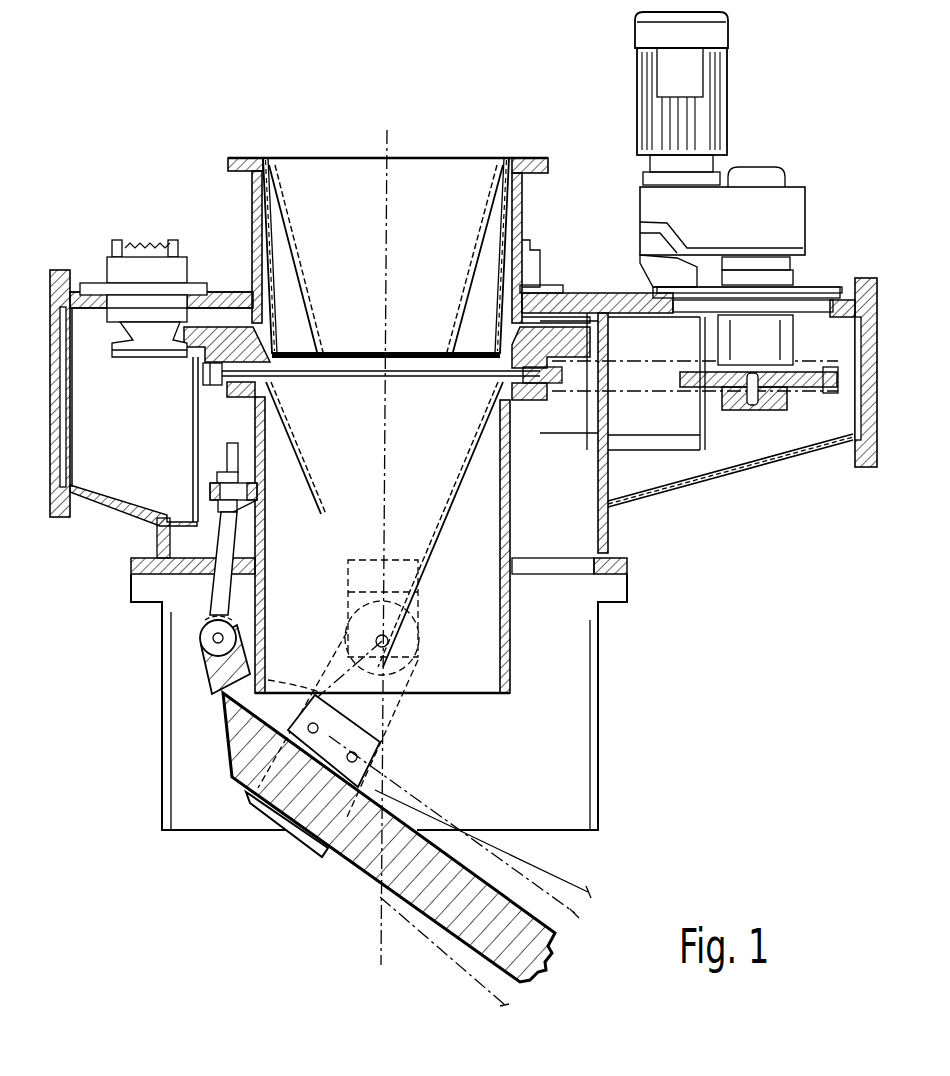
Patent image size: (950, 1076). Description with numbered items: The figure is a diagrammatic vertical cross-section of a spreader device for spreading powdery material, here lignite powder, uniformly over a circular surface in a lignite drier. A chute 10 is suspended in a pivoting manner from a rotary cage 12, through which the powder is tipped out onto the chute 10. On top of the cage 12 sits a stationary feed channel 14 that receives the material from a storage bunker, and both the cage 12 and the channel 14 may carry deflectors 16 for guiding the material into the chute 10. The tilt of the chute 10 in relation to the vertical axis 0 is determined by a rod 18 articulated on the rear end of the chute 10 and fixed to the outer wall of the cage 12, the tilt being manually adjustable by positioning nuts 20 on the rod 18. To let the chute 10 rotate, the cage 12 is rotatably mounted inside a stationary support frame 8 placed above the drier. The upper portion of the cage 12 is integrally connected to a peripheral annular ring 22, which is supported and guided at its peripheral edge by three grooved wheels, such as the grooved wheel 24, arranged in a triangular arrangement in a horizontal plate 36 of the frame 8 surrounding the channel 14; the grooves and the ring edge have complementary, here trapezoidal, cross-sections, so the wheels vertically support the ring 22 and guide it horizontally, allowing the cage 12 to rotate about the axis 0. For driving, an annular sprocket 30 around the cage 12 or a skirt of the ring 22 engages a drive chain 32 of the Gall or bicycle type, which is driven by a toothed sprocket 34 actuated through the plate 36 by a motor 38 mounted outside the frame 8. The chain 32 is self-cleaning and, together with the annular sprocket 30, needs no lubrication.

The vertical axis 0 is at (390, 191).
The stationary support frame 8 is at (618, 536).
The chute 10 is at (354, 846).
The rotary cage 12 is at (506, 650).
The stationary feed channel 14 is at (517, 198).
The deflectors 16 is at (457, 322).
The rod 18 is at (217, 590).
The positioning nuts 20 is at (220, 505).
The peripheral annular ring 22 is at (192, 358).
The grooved wheel 24 is at (120, 357).
The annular sprocket 30 is at (556, 383).
The drive chain 32 is at (670, 393).
The toothed sprocket 34 is at (775, 404).
The horizontal plate 36 is at (232, 290).
The motor 38 is at (707, 135).